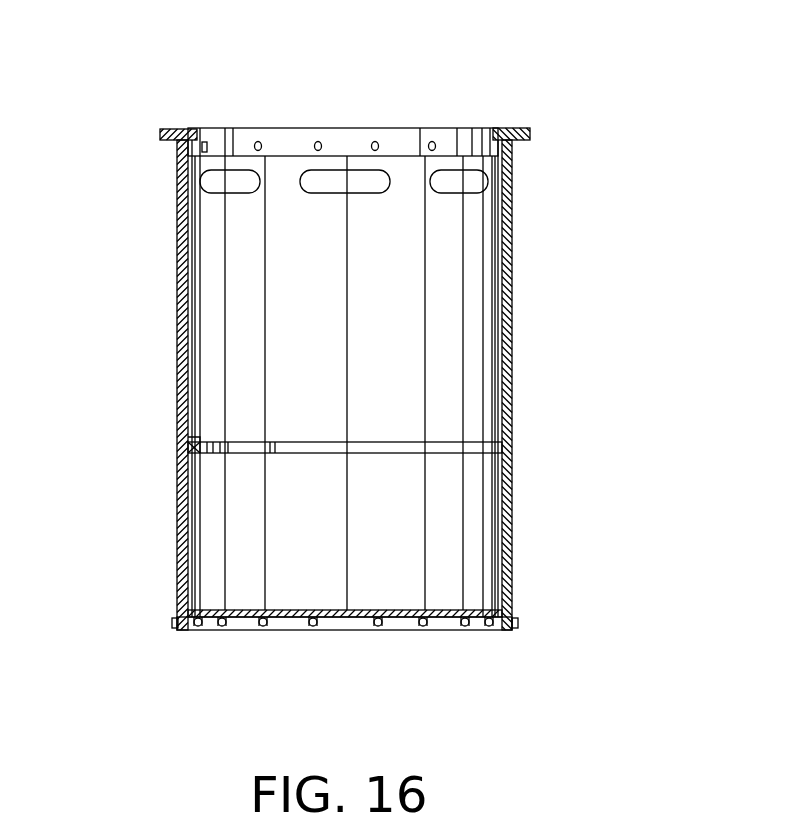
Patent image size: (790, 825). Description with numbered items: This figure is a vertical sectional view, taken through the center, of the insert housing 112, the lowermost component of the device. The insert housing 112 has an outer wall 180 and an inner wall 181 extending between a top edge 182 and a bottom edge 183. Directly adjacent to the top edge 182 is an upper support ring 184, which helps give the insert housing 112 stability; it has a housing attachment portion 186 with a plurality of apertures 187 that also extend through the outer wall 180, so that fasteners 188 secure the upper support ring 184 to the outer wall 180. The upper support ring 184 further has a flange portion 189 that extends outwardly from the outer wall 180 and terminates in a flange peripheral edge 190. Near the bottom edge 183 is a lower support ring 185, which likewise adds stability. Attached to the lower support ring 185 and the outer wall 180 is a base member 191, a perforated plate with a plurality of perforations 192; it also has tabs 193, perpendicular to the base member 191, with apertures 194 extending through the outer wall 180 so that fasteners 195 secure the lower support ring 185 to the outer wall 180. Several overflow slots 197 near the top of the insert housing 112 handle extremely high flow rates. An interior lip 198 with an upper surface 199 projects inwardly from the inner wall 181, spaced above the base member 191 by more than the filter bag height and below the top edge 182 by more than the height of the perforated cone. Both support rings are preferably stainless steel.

The insert housing 112 is at (548, 283).
The outer wall 180 is at (513, 510).
The inner wall 181 is at (500, 578).
The top edge 182 is at (185, 128).
The bottom edge 183 is at (180, 630).
The upper support ring 184 is at (385, 110).
The lower support ring 185 is at (478, 632).
The housing attachment portion 186 is at (222, 128).
The apertures 187 is at (267, 128).
The fasteners 188 is at (334, 128).
The flange portion 189 is at (523, 128).
The flange peripheral edge 190 is at (160, 134).
The base member 191 is at (405, 632).
The perforations 192 is at (250, 632).
The tabs 193 is at (196, 632).
The apertures 194 is at (310, 632).
The fasteners 195 is at (432, 632).
The overflow slots 197 is at (325, 193).
The interior lip 198 is at (250, 450).
The upper surface 199 is at (197, 440).